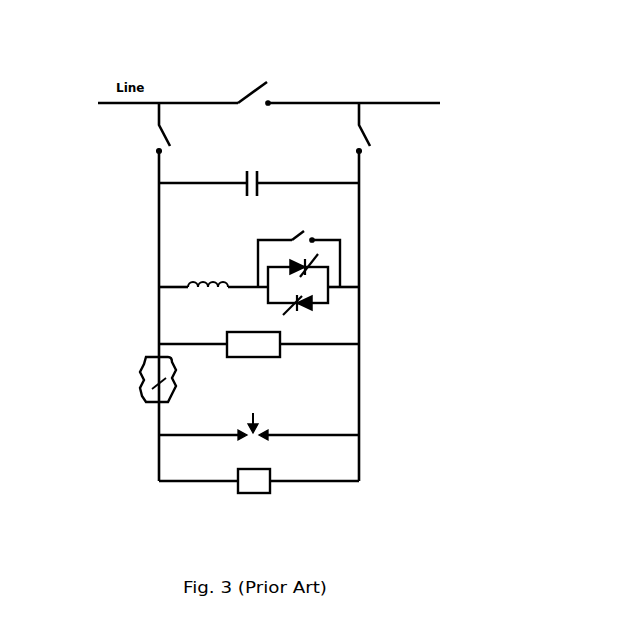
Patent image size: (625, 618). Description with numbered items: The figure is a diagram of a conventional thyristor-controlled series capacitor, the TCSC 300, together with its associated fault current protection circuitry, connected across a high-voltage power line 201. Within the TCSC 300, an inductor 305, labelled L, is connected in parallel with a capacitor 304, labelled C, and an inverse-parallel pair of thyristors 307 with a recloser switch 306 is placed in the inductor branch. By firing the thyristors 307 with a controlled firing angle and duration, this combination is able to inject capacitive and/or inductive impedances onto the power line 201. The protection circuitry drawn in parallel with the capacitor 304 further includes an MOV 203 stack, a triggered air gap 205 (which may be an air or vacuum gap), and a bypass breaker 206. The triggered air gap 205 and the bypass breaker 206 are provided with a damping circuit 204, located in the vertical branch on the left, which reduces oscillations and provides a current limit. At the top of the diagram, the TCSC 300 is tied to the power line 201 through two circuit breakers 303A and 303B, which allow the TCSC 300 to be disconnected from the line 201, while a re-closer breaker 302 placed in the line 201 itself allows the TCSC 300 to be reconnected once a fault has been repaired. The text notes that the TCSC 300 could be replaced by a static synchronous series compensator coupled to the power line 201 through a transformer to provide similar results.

The TCSC 300 is at (227, 58).
The re-closer breaker 302 is at (273, 88).
The power line 201 is at (389, 103).
The circuit breaker 303A is at (166, 143).
The circuit breaker 303B is at (366, 151).
The capacitor 304 is at (260, 168).
The inductor 305 is at (218, 272).
The recloser switch 306 is at (313, 240).
The inverse-parallel pair of thyristors 307 is at (318, 304).
The MOV stack 203 is at (278, 357).
The damping circuit 204 is at (143, 392).
The triggered air gap 205 is at (255, 440).
The bypass breaker 206 is at (262, 493).